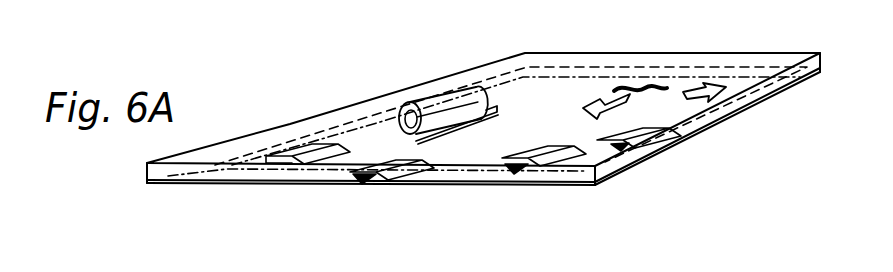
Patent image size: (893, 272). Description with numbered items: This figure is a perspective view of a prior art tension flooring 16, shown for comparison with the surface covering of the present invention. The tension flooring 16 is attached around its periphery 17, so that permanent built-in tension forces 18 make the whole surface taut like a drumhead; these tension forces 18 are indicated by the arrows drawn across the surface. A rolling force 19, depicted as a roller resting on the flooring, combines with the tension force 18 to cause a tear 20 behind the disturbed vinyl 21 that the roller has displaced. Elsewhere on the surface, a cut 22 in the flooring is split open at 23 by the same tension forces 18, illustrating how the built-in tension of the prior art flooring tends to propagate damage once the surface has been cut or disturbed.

The tension flooring 16 is at (231, 140).
The periphery 17 is at (200, 185).
The tension forces 18 is at (295, 141).
The rolling force 19 is at (442, 93).
The tear 20 is at (403, 116).
The disturbed vinyl 21 is at (497, 108).
The cut 22 is at (641, 89).
The split 23 is at (670, 92).